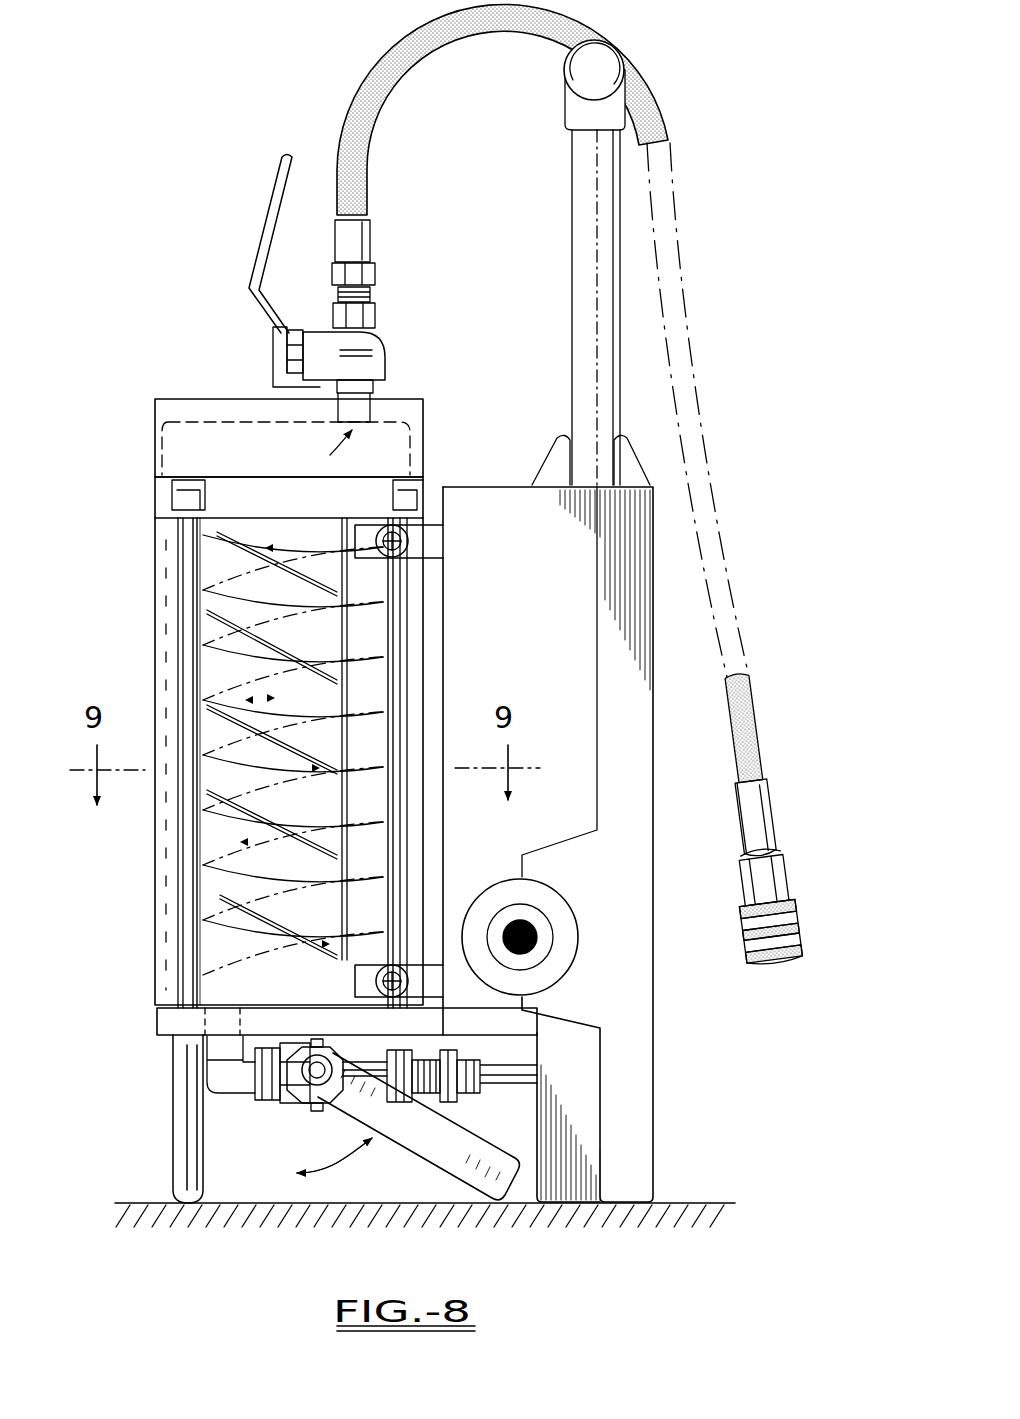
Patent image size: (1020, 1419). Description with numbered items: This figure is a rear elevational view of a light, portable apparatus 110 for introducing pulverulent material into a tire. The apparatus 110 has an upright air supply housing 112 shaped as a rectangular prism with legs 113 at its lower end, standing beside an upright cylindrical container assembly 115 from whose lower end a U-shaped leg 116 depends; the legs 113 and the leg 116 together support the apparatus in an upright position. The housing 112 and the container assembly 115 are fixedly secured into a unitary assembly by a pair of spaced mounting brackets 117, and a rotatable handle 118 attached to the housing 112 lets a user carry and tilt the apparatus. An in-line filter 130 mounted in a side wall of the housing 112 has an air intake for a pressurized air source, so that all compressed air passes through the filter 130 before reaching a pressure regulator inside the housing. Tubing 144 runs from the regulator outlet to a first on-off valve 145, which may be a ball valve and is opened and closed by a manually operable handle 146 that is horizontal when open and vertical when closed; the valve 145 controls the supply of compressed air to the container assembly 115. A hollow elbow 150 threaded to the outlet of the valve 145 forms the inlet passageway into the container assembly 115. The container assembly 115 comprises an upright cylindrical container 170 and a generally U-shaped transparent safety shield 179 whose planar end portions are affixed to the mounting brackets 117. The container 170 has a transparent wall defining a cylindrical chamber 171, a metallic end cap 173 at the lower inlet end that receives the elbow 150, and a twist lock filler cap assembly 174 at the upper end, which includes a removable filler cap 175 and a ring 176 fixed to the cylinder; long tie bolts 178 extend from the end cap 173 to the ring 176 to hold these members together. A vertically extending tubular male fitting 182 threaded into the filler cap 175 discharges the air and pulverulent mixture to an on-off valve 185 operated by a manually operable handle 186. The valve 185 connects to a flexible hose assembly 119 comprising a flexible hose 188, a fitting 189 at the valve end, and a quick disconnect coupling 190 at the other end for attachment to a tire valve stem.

The apparatus 110 is at (205, 150).
The air supply housing 112 is at (658, 1062).
The legs 113 is at (643, 1170).
The cylindrical container assembly 115 is at (150, 568).
The U-shaped leg 116 is at (172, 1144).
The mounting brackets 117 is at (443, 531).
The rotatable handle 118 is at (572, 117).
The flexible hose assembly 119 is at (760, 713).
The in-line filter 130 is at (556, 895).
The tubing 144 is at (517, 1084).
The first on-off valve 145 is at (300, 1104).
The manually operable handle 146 is at (427, 1150).
The hollow elbow 150 is at (222, 1086).
The upright cylindrical container 170 is at (215, 648).
The cylindrical chamber 171 is at (232, 690).
The end cap 173 is at (157, 1023).
The twist lock filler cap assembly 174 is at (150, 443).
The filler cap 175 is at (155, 407).
The ring 176 is at (155, 495).
The tie bolts 178 is at (190, 613).
The transparent safety shield 179 is at (155, 863).
The tubular male fitting 182 is at (375, 391).
The on-off valve 185 is at (385, 344).
The manually operable handle 186 is at (270, 212).
The flexible hose 188 is at (393, 50).
The fitting 189 is at (372, 236).
The quick disconnect coupling 190 is at (805, 934).